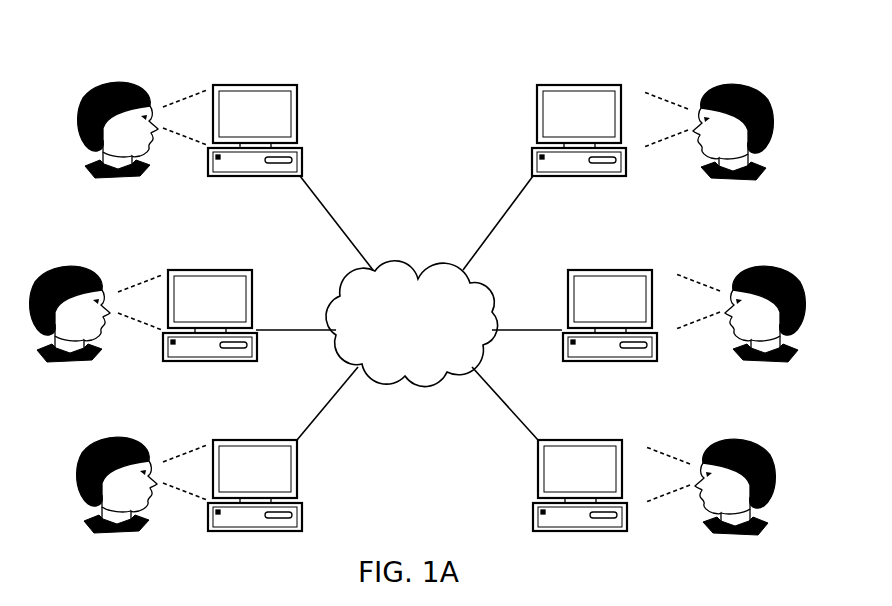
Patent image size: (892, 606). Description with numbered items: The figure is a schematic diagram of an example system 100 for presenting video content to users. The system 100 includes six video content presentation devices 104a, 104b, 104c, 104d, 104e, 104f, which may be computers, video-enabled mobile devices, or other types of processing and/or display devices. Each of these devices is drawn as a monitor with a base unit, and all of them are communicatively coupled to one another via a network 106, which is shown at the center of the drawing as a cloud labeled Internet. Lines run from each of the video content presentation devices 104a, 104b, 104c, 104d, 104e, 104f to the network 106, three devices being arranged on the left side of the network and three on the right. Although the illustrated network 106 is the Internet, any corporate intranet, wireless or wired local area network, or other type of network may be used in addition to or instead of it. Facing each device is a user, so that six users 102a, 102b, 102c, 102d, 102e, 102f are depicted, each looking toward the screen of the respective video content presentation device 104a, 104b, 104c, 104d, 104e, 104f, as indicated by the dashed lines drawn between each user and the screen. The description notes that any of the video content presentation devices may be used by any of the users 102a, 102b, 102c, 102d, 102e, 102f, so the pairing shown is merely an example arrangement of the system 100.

The system 100 is at (152, 49).
The user 102a is at (118, 82).
The user 102b is at (73, 266).
The user 102c is at (118, 437).
The user 102d is at (727, 83).
The user 102e is at (765, 267).
The user 102f is at (733, 435).
The video content presentation device 104a is at (297, 86).
The video content presentation device 104b is at (251, 270).
The video content presentation device 104c is at (298, 470).
The video content presentation device 104d is at (537, 86).
The video content presentation device 104e is at (569, 272).
The video content presentation device 104f is at (539, 453).
The network 106 is at (440, 268).